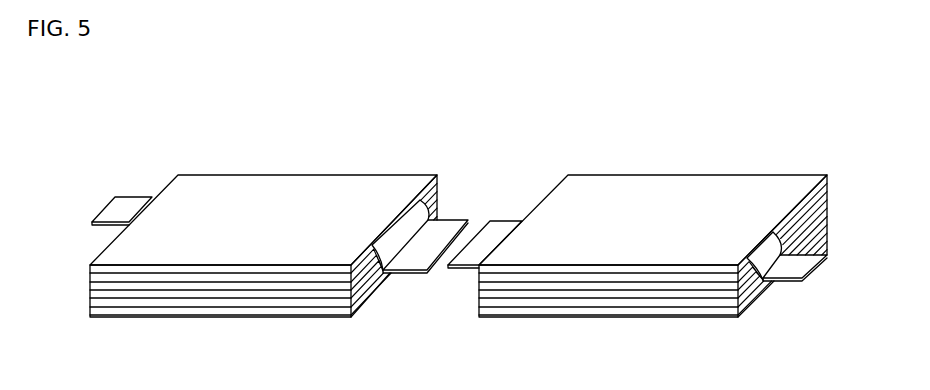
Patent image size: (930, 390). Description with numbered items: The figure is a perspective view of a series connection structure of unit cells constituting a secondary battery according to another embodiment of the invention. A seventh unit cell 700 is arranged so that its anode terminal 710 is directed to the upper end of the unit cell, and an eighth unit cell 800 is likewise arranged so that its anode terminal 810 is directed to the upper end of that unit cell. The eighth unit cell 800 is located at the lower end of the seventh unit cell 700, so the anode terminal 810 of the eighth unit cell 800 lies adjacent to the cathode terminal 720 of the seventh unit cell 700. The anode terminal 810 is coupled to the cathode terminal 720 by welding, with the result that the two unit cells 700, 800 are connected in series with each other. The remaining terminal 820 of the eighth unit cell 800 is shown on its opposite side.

The seventh unit cell 700 is at (213, 175).
The anode terminal 710 is at (92, 223).
The cathode terminal 720 is at (407, 273).
The eighth unit cell 800 is at (633, 175).
The anode terminal 810 is at (450, 270).
The second electrode tab of second battery cell 820 is at (783, 282).